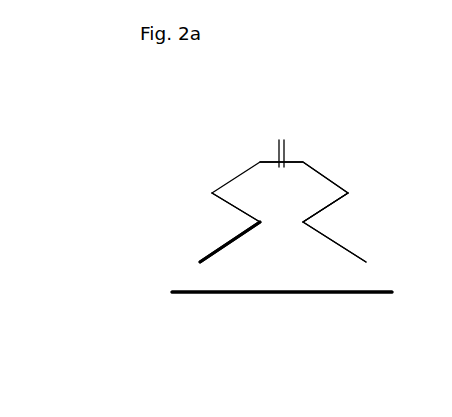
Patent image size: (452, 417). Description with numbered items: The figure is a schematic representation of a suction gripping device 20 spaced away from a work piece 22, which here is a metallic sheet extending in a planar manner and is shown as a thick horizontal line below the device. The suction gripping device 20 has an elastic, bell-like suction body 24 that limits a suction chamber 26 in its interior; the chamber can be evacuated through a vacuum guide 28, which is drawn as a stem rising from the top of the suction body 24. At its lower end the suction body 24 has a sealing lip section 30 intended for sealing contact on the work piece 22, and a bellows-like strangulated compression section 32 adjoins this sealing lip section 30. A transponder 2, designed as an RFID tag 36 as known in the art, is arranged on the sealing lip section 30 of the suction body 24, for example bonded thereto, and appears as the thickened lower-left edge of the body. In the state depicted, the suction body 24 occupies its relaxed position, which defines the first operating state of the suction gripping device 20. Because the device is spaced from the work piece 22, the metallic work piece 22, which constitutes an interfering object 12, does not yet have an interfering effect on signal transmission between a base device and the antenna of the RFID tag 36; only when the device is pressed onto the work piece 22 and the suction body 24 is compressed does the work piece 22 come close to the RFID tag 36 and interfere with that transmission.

The suction gripping device 20 is at (199, 165).
The suction body 24 is at (340, 175).
The vacuum guide 28 is at (283, 133).
The compression section 32 is at (341, 203).
The sealing lip section 30 is at (353, 247).
The transponder 2 is at (230, 242).
The RFID tag 36 is at (224, 243).
The suction chamber 26 is at (283, 230).
The interfering object 12 is at (311, 322).
The work piece 22 is at (242, 329).